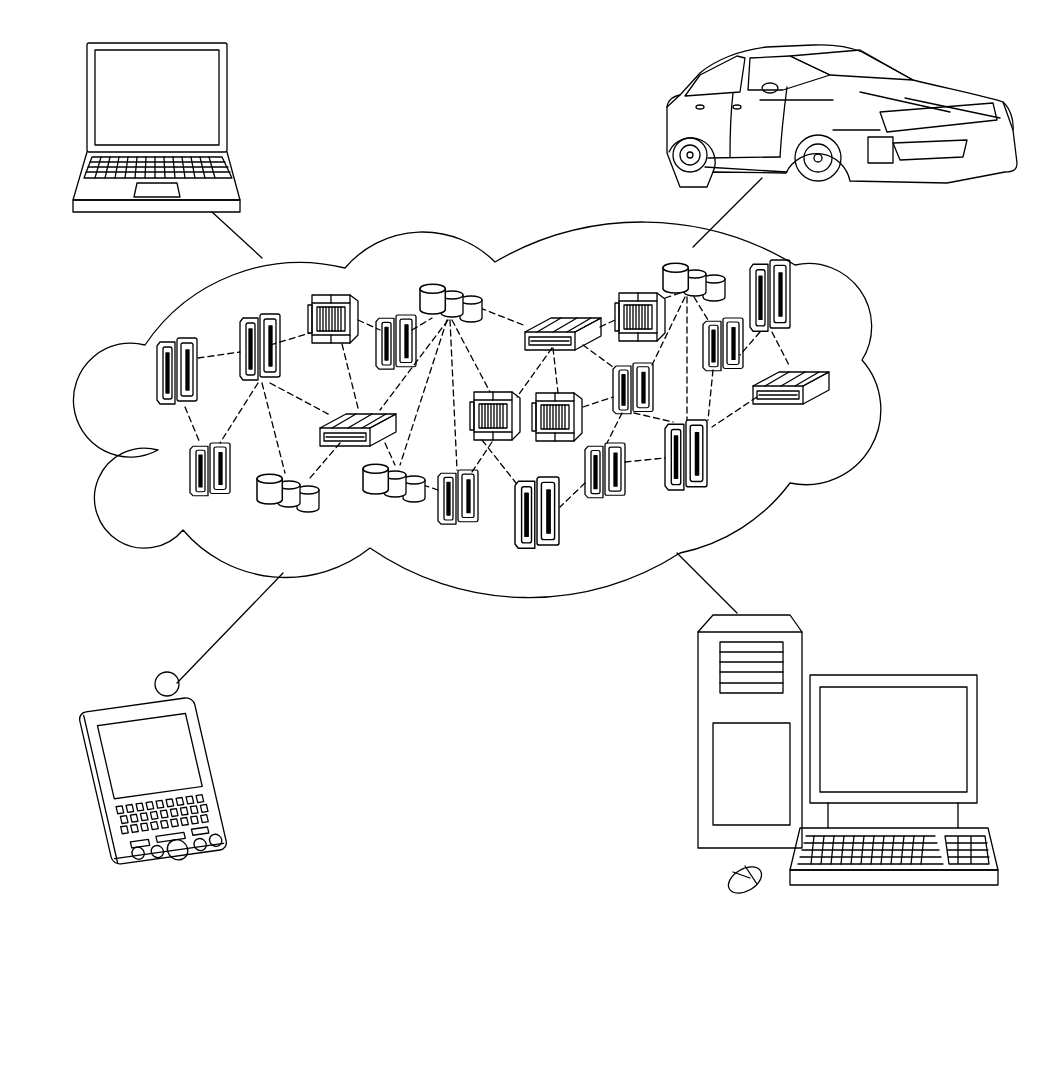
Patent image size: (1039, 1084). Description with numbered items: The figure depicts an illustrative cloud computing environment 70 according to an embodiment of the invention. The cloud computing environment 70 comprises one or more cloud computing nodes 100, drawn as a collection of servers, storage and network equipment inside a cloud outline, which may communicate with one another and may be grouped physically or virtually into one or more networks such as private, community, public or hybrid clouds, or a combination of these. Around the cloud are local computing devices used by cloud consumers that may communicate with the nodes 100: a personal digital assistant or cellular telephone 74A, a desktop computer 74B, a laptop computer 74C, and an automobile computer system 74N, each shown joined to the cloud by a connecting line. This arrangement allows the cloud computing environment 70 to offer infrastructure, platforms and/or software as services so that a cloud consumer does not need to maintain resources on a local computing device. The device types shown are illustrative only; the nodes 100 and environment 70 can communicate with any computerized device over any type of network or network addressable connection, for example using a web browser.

The cloud computing environment 70 is at (892, 383).
The cloud computing nodes 100 is at (832, 412).
The personal digital assistant or cellular telephone 74A is at (218, 768).
The desktop computer 74B is at (890, 675).
The laptop computer 74C is at (227, 107).
The automobile computer system 74N is at (670, 121).